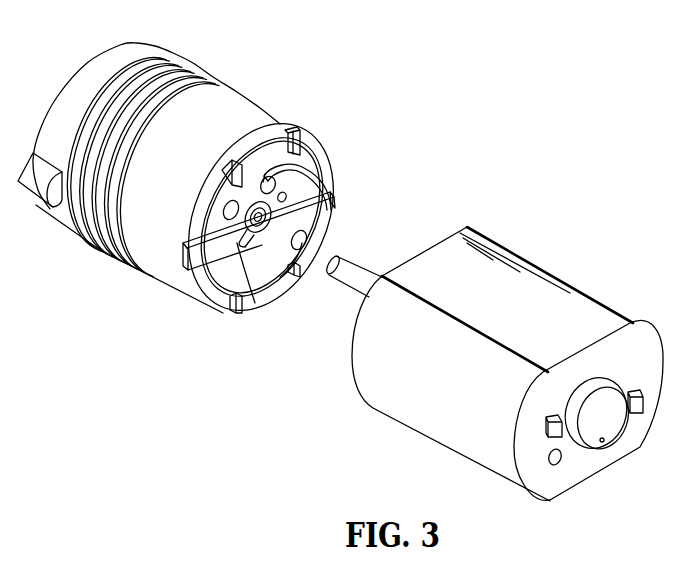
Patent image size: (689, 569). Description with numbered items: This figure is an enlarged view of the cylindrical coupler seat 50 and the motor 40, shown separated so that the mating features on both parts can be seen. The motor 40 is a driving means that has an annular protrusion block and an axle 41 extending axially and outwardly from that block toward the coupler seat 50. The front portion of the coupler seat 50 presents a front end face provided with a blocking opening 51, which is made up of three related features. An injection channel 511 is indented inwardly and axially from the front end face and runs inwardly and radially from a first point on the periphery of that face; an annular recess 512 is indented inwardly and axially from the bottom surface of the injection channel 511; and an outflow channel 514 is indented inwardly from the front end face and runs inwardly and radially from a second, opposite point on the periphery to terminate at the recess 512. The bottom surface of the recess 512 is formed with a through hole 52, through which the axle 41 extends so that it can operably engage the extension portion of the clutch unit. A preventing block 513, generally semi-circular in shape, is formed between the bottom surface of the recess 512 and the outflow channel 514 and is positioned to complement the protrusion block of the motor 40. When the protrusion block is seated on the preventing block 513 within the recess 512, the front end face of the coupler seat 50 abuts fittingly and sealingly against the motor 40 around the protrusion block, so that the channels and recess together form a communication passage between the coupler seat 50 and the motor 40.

The motor 40 is at (565, 242).
The axle 41 is at (350, 273).
The coupler seat 50 is at (102, 273).
The blocking opening 51 is at (313, 170).
The injection channel 511 is at (250, 142).
The annular recess 512 is at (292, 150).
The preventing block 513 is at (333, 176).
The outflow channel 514 is at (386, 149).
The through hole 52 is at (252, 314).